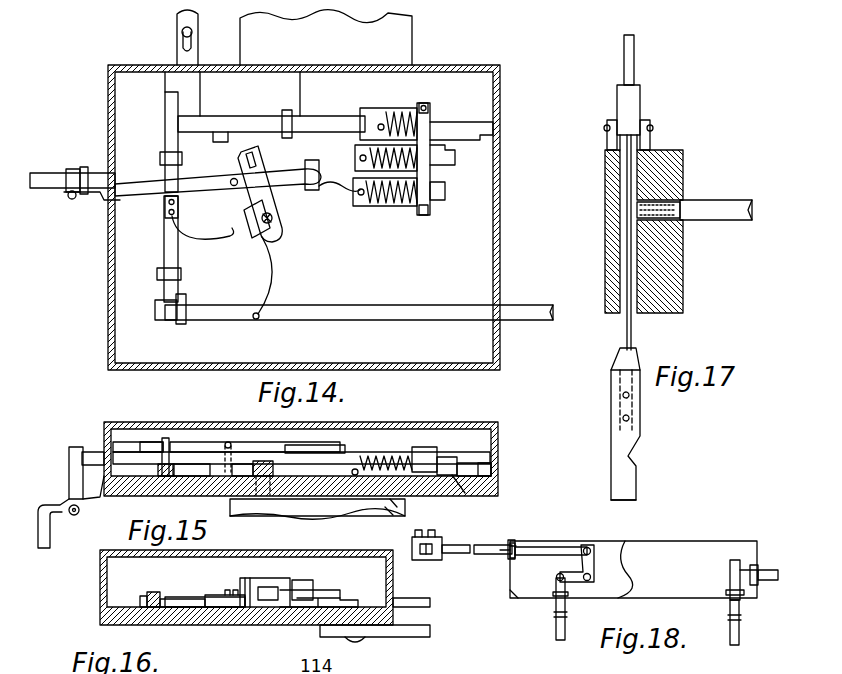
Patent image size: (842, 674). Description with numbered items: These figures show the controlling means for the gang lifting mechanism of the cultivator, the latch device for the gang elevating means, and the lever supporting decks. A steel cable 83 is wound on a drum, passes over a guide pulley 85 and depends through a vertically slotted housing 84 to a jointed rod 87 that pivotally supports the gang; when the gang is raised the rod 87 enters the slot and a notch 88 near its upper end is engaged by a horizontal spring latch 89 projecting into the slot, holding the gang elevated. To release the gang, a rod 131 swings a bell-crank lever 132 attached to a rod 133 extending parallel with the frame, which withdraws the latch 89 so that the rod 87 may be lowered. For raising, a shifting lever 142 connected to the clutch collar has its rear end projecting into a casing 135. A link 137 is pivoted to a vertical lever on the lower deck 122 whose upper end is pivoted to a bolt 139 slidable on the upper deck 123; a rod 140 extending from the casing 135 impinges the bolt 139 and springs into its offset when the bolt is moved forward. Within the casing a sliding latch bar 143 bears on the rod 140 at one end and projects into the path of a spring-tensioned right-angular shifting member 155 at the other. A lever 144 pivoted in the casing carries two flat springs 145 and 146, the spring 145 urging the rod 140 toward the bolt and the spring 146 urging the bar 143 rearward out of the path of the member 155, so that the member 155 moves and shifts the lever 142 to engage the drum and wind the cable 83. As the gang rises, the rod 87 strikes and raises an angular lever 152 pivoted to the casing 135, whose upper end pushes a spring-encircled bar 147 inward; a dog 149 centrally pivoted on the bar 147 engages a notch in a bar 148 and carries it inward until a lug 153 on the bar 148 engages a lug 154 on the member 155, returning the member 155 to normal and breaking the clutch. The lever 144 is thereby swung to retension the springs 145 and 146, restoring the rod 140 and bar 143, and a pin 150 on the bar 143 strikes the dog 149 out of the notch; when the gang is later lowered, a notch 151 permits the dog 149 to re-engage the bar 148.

In FIG. 17, the steel cable 83 is at (624, 55).
In FIG. 15, the vertically slotted housing 84 is at (446, 526).
In FIG. 17, the vertically slotted housing 84 is at (684, 276).
In FIG. 17, the guide pulley 85 is at (640, 140).
In FIG. 17, the jointed rod 87 is at (640, 487).
In FIG. 17, the notch 88 is at (640, 458).
In FIG. 17, the spring latch 89 is at (637, 210).
In FIG. 18, the lower deck 122 is at (556, 541).
In FIG. 18, the upper deck 123 is at (684, 548).
In FIG. 18, the rod 131 is at (555, 630).
In FIG. 18, the bell-crank lever 132 is at (594, 560).
In FIG. 15, the rod 133 is at (478, 555).
In FIG. 17, the rod 133 is at (722, 200).
In FIG. 14, the casing 135 is at (490, 68).
In FIG. 15, the casing 135 is at (500, 434).
In FIG. 16, the casing 135 is at (100, 588).
In FIG. 18, the link 137 is at (730, 635).
In FIG. 18, the bolt 139 is at (730, 568).
In FIG. 14, the rod 140 is at (440, 305).
In FIG. 16, the rod 140 is at (140, 600).
In FIG. 18, the rod 140 is at (770, 560).
In FIG. 14, the shifting lever 142 is at (180, 15).
In FIG. 14, the sliding latch bar 143 is at (179, 250).
In FIG. 15, the sliding latch bar 143 is at (168, 490).
In FIG. 16, the sliding latch bar 143 is at (188, 607).
In FIG. 14, the lever 144 is at (278, 214).
In FIG. 14, the flat spring 145 is at (279, 268).
In FIG. 16, the flat spring 145 is at (170, 599).
In FIG. 14, the flat spring 146 is at (203, 219).
In FIG. 14, the bar 147 is at (346, 196).
In FIG. 15, the bar 147 is at (365, 450).
In FIG. 16, the bar 147 is at (252, 592).
In FIG. 14, the bar 148 is at (328, 147).
In FIG. 15, the bar 148 is at (320, 505).
In FIG. 16, the bar 148 is at (300, 590).
In FIG. 14, the dog 149 is at (208, 178).
In FIG. 15, the dog 149 is at (205, 447).
In FIG. 14, the pin 150 is at (167, 205).
In FIG. 15, the pin 150 is at (168, 440).
In FIG. 16, the pin 150 is at (256, 588).
In FIG. 14, the notch 151 is at (160, 176).
In FIG. 15, the notch 151 is at (150, 440).
In FIG. 14, the angular lever 152 is at (60, 163).
In FIG. 15, the angular lever 152 is at (68, 468).
In FIG. 17, the angular lever 152 is at (617, 98).
In FIG. 14, the lug 153 is at (492, 143).
In FIG. 15, the lug 153 is at (500, 476).
In FIG. 16, the lug 153 is at (325, 607).
In FIG. 14, the lug 154 is at (455, 128).
In FIG. 15, the lug 154 is at (473, 500).
In FIG. 14, the right-angular shifting member 155 is at (266, 116).
In FIG. 15, the right-angular shifting member 155 is at (466, 470).
In FIG. 16, the right-angular shifting member 155 is at (420, 594).